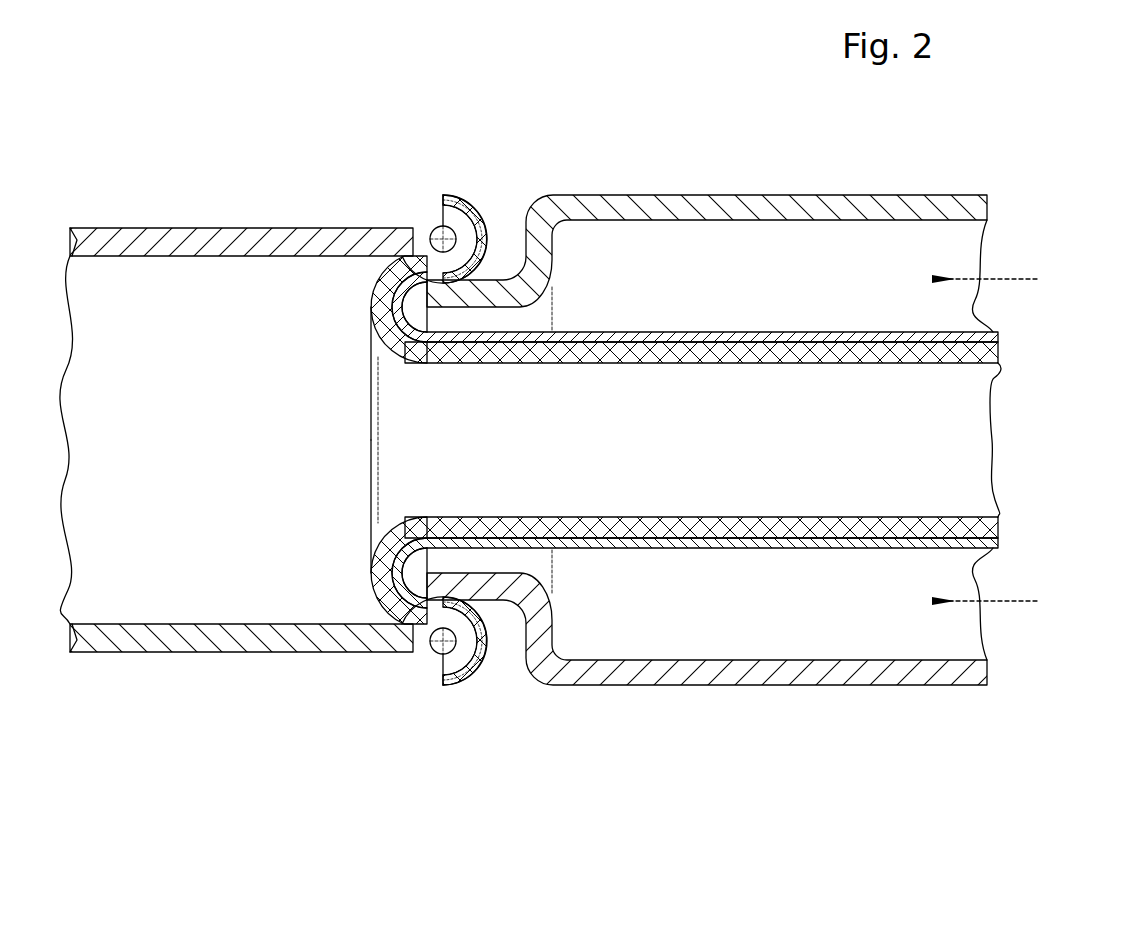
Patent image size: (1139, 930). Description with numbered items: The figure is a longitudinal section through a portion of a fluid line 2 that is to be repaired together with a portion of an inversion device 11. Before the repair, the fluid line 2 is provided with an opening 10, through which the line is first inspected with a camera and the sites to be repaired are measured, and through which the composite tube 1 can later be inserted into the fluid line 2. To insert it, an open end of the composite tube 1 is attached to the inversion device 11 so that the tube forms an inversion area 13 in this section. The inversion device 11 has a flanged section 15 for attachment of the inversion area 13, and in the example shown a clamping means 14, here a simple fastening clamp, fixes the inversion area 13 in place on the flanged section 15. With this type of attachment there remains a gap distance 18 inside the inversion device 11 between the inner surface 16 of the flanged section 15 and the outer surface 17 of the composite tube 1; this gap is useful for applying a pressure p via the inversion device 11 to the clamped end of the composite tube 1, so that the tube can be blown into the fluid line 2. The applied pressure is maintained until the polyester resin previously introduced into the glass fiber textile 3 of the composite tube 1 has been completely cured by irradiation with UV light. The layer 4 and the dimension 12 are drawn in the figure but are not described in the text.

The composite tube 1 is at (1020, 426).
The fluid line 2 is at (245, 228).
The glass fiber textile 3 is at (1000, 372).
The pipe outer layer 4 is at (977, 326).
The opening 10 is at (413, 212).
The inversion device 11 is at (727, 698).
The inner diameter 12 is at (609, 366).
The inversion area 13 is at (452, 188).
The clamping means 14 is at (498, 240).
The flanged section 15 is at (525, 218).
The inner surface 16 is at (520, 576).
The outer surface 17 is at (588, 555).
The gap distance 18 is at (520, 310).